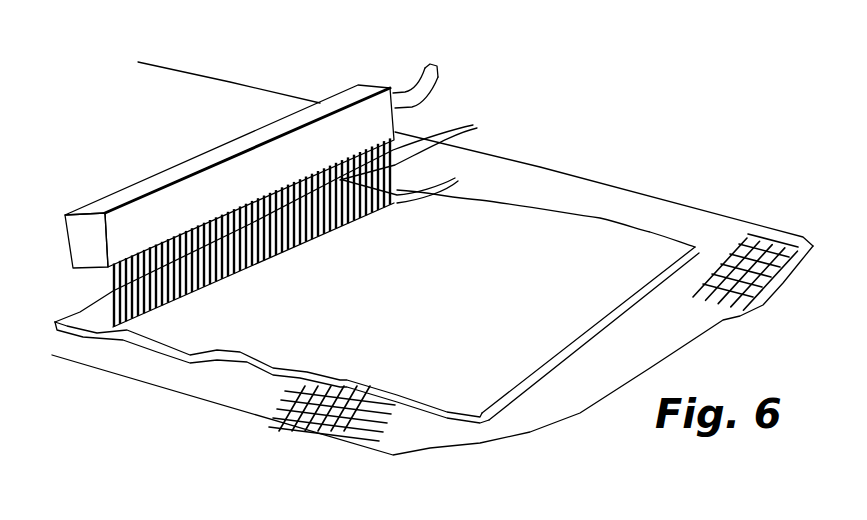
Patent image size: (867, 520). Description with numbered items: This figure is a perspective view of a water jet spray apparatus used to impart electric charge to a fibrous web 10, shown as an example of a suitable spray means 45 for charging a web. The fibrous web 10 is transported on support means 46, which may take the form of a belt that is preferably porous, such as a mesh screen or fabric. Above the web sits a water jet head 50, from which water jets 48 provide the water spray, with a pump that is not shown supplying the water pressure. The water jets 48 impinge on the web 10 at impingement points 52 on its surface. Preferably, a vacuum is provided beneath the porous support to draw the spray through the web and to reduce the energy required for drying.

The fibrous web 10 is at (615, 242).
The spray means 45 is at (418, 45).
The support means 46 is at (732, 247).
The water jets 48 is at (419, 143).
The water jet head 50 is at (184, 163).
The impingement points 52 is at (413, 182).